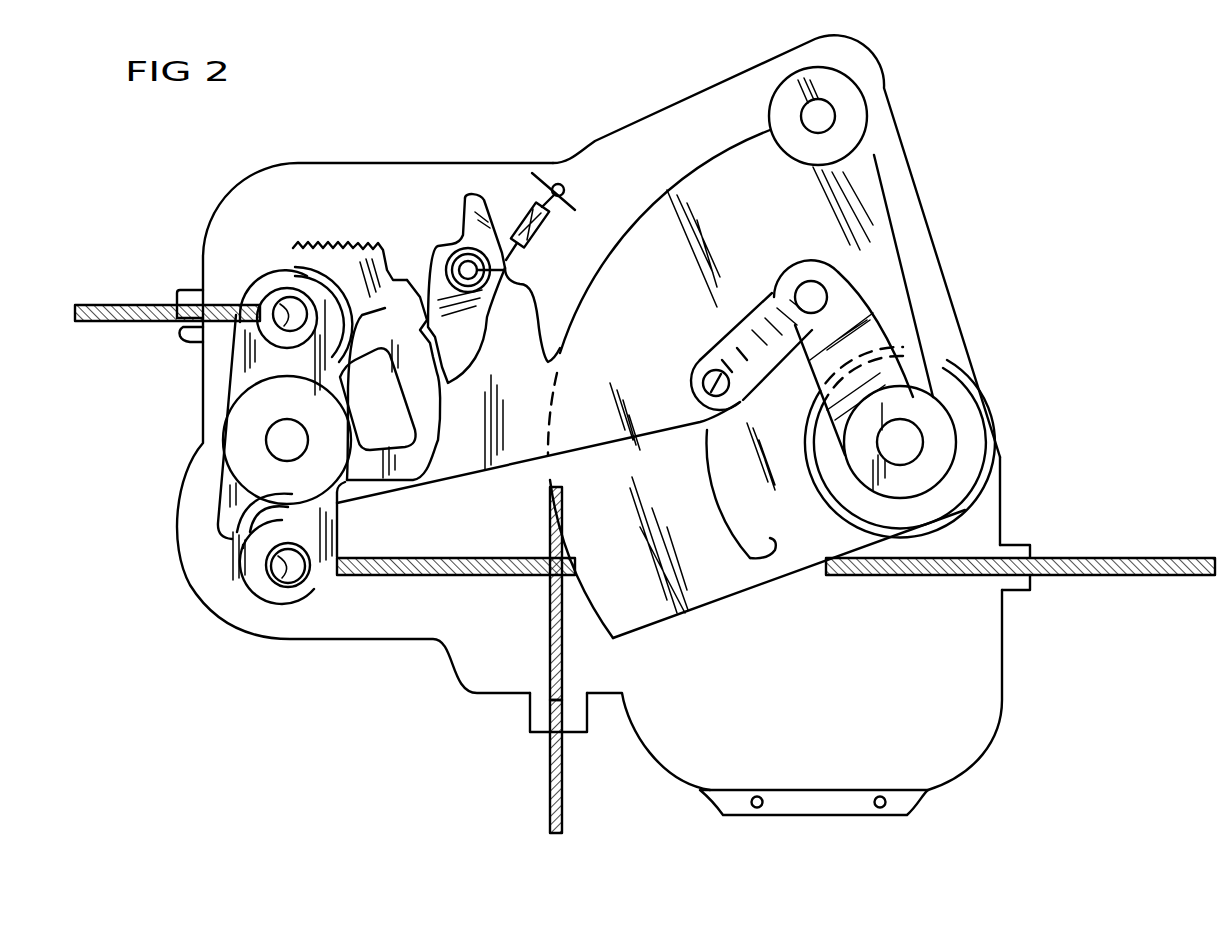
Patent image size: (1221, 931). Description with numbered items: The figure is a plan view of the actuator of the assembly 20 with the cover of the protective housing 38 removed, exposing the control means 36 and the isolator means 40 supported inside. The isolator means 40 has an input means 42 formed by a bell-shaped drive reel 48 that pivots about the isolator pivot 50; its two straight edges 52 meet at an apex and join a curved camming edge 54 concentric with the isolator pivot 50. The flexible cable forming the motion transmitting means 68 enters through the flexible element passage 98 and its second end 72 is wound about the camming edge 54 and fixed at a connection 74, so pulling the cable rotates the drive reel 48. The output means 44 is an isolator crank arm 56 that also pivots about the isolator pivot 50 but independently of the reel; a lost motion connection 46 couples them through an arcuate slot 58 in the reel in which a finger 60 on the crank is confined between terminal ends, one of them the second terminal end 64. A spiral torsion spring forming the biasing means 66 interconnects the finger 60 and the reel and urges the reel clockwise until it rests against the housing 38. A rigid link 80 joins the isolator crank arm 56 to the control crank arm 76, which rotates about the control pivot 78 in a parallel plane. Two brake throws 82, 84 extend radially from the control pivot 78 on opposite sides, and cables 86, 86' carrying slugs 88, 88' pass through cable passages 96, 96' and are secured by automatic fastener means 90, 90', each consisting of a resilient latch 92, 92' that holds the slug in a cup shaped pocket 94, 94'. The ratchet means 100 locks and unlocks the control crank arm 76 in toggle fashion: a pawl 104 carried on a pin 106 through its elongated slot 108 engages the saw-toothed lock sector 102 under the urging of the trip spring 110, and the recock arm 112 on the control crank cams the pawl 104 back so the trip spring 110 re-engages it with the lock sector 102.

The assembly 20 is at (1008, 183).
The control means 36 is at (288, 266).
The protective housing 38 is at (685, 100).
The isolator means 40 is at (992, 458).
The input means 42 is at (888, 212).
The output means 44 is at (872, 299).
The lost motion connection 46 is at (700, 477).
The drive reel 48 is at (695, 165).
The isolator pivot 50 is at (903, 442).
The straight edges 52 is at (942, 327).
The camming edge 54 is at (593, 615).
The isolator crank arm 56 is at (912, 355).
The arcuate slot 58 is at (738, 478).
The finger 60 is at (808, 285).
The second terminal end 64 is at (778, 545).
The biasing means 66 is at (775, 398).
The motion transmitting means 68 is at (548, 780).
The second end 72 is at (832, 110).
The connection 74 is at (770, 112).
The control crank arm 76 is at (502, 478).
The control pivot 78 is at (267, 443).
The rigid link 80 is at (740, 325).
The brake throw 82 is at (233, 337).
The brake throw 84 is at (350, 556).
The cable 86 is at (167, 285).
The cable 86' is at (1020, 531).
The slug 88 is at (265, 293).
The slug 88' is at (286, 601).
The automatic fastener means 90 is at (277, 246).
The automatic fastener means 90' is at (244, 614).
The resilient latch 92 is at (351, 310).
The resilient latch 92' is at (207, 532).
The cup shaped pocket 94 is at (285, 337).
The cup shaped pocket 94' is at (335, 540).
The cable passage 96 is at (169, 267).
The cable passage 96' is at (1062, 584).
The flexible element passage 98 is at (578, 740).
The ratchet means 100 is at (346, 245).
The lock sector 102 is at (382, 268).
The pawl 104 is at (468, 196).
The pin 106 is at (508, 274).
The elongated slot 108 is at (446, 249).
The trip spring 110 is at (515, 200).
The recock arm 112 is at (545, 300).